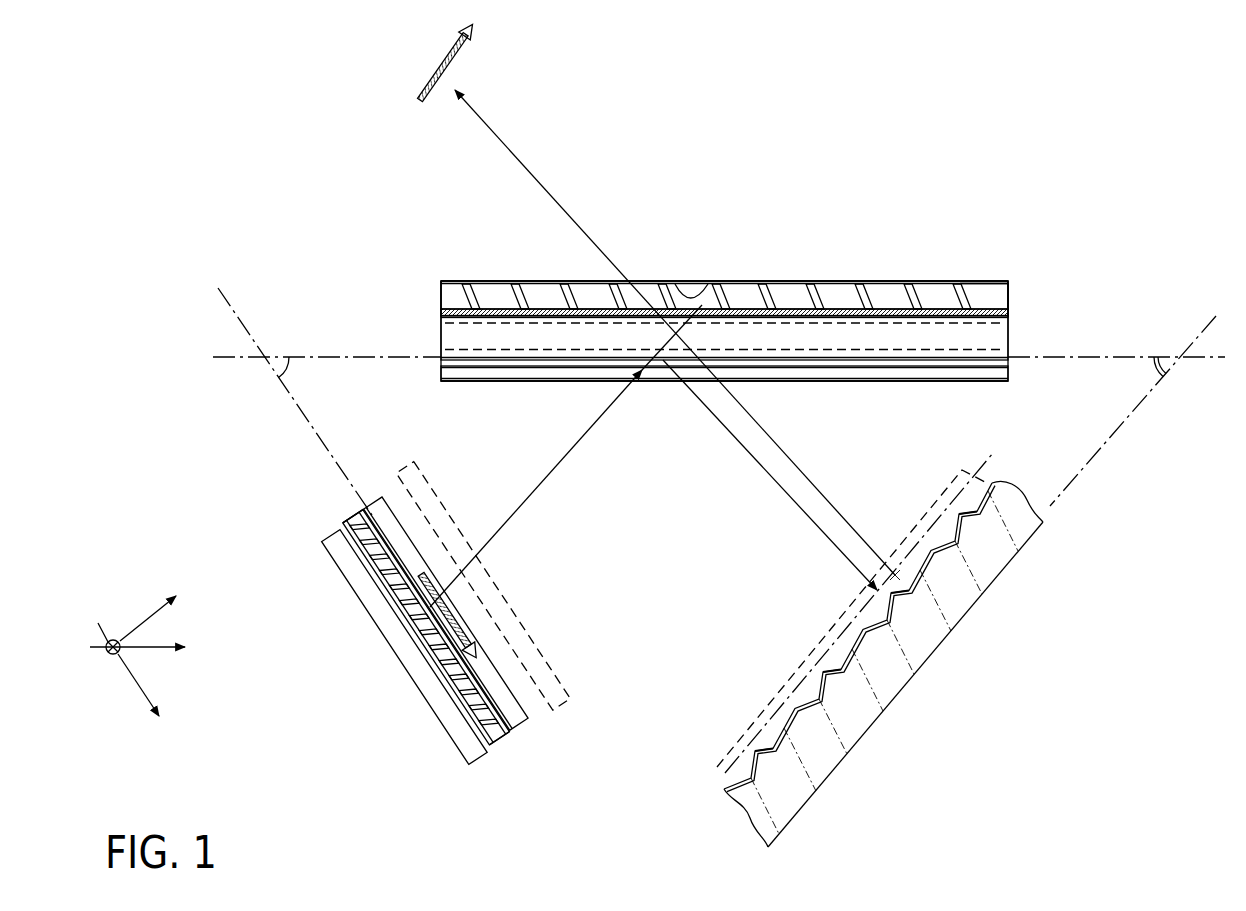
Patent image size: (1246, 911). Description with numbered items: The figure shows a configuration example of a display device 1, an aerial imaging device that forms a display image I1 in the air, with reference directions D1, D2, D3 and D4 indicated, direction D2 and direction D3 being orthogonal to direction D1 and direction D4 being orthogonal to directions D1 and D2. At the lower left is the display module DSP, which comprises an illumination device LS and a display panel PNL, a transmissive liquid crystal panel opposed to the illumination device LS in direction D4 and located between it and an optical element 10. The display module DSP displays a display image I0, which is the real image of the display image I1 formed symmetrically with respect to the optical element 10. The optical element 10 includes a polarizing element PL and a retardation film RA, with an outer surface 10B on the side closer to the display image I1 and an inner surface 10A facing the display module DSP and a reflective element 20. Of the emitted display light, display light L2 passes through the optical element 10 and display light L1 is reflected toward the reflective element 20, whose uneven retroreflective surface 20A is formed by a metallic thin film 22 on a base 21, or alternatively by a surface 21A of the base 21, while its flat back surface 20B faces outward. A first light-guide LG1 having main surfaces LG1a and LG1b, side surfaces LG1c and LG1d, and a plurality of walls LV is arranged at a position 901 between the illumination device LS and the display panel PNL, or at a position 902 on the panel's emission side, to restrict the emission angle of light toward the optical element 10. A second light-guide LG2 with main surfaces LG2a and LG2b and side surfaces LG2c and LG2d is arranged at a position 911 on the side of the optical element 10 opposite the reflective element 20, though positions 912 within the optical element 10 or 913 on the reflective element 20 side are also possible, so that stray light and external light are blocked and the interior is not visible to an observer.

The display device 1 is at (824, 210).
The optical element 10 is at (732, 295).
The inner surface 10A is at (925, 367).
The outer surface 10B is at (891, 306).
The reflective element 20 is at (894, 633).
The retroreflective surface 20A is at (859, 622).
The back surface 20B is at (878, 724).
The base 21 is at (897, 664).
The surface of the base 21A is at (809, 695).
The metallic thin film 22 is at (939, 546).
The position 901 is at (343, 518).
The position 902 is at (558, 712).
The position 911 is at (990, 283).
The position 912 is at (977, 283).
The position 913 is at (970, 460).
The second light-guide LG2 is at (732, 261).
The main surface LG2a is at (824, 315).
The main surface LG2b is at (779, 275).
The side surface LG2c is at (437, 289).
The side surface LG2d is at (1013, 291).
The first light-guide LG1 is at (406, 654).
The main surface LG1a is at (411, 640).
The main surface LG1b is at (462, 696).
The side surface LG1c is at (347, 507).
The side surface LG1d is at (498, 765).
The wall LV is at (568, 281).
The polarizing element PL is at (999, 338).
The retardation film RA is at (999, 372).
The display panel PNL is at (377, 506).
The display module DSP is at (406, 636).
The illumination device LS is at (468, 753).
The display image I0 is at (468, 618).
The display image I1 is at (464, 48).
The display light L1 is at (736, 440).
The display light L2 is at (668, 343).
The direction D1 is at (101, 654).
The direction D2 is at (150, 700).
The direction D3 is at (156, 649).
The direction D4 is at (165, 610).